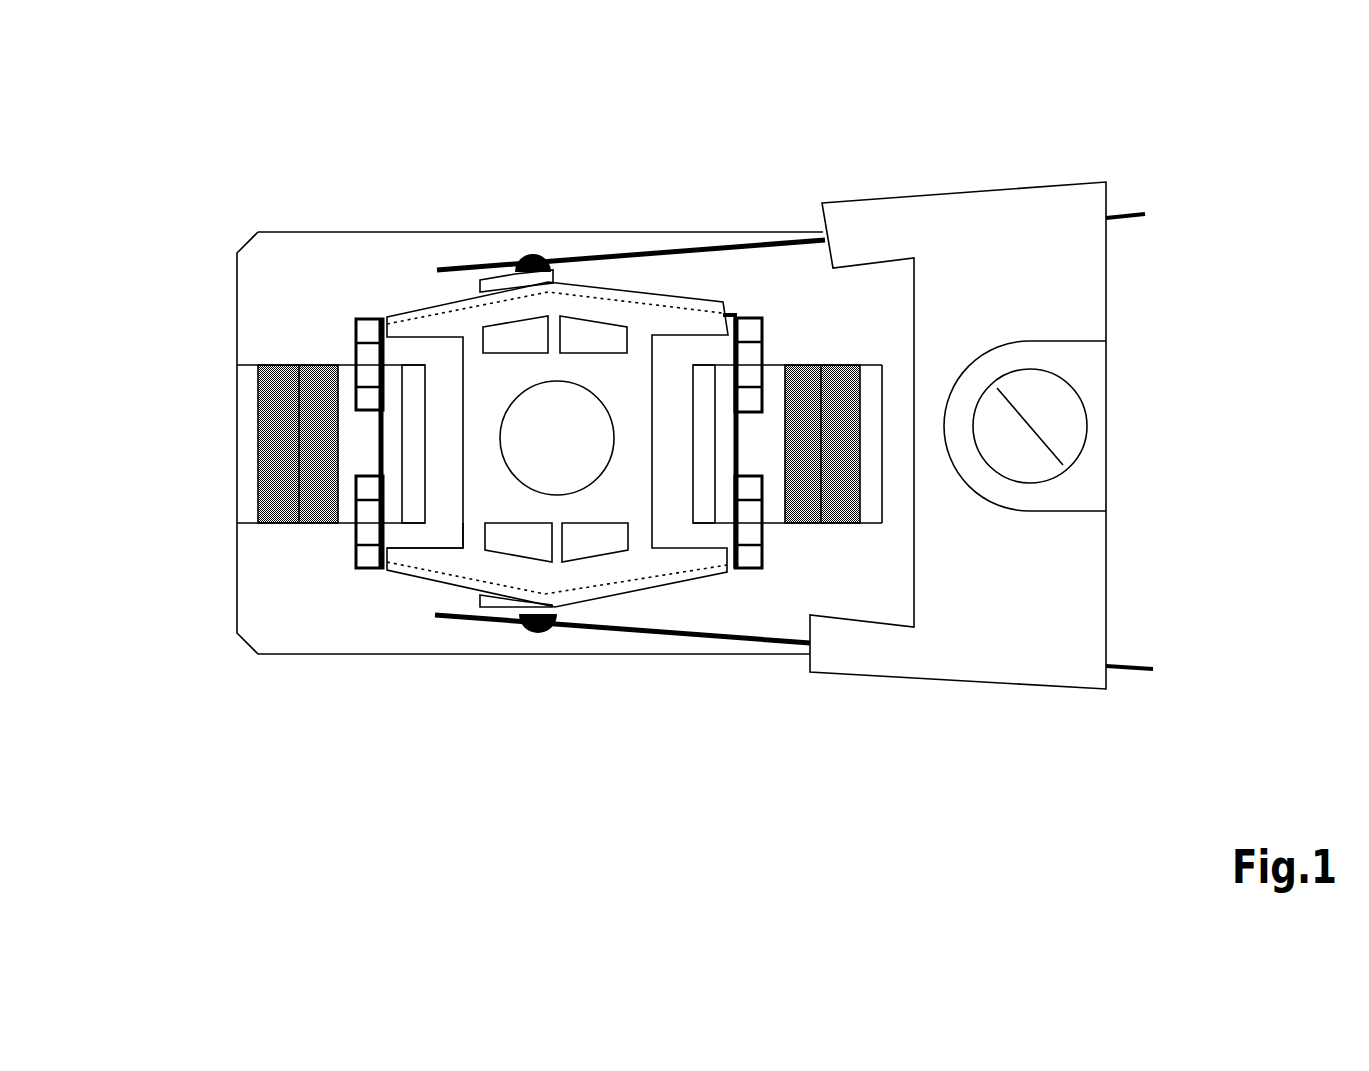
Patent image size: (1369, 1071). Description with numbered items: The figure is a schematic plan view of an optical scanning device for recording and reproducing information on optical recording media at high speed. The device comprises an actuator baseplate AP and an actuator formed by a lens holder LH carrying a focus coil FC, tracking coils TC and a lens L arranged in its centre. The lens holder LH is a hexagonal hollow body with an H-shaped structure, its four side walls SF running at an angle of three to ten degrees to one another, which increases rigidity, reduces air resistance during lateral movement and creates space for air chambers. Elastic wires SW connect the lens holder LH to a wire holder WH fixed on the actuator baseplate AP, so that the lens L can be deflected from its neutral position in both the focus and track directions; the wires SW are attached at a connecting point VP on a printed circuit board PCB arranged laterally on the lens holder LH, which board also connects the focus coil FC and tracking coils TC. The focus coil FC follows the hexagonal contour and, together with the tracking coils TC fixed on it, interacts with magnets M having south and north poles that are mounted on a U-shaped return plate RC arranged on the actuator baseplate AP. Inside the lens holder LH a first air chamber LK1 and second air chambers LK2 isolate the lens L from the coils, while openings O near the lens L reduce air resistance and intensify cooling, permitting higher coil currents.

The side wall SF is at (428, 310).
The connecting point VP is at (537, 253).
The printed circuit board PCB is at (490, 288).
The first air chamber LK1 is at (590, 367).
The second air chamber LK2 is at (438, 522).
The wire SW is at (641, 254).
The tracking coil TC is at (368, 319).
The focus coil FC is at (412, 323).
The return plate RC is at (347, 398).
The magnet M is at (303, 513).
The lens holder LH is at (462, 560).
The lens L is at (557, 466).
The opening O is at (585, 540).
The actuator baseplate AP is at (762, 598).
The wire holder WH is at (1057, 588).